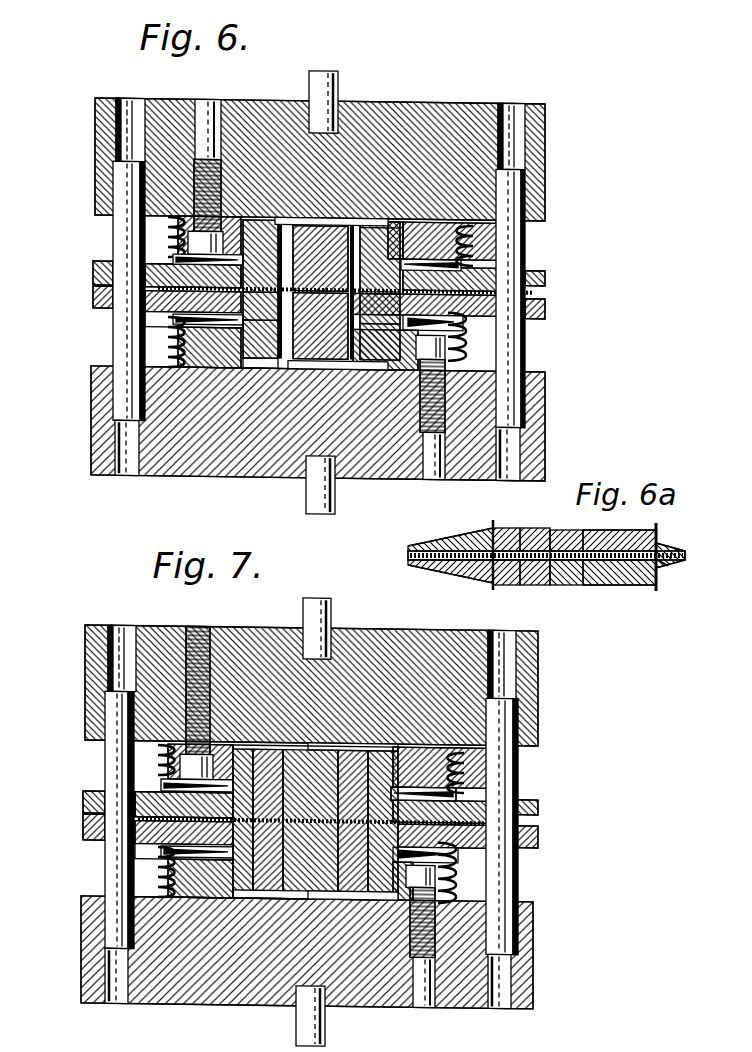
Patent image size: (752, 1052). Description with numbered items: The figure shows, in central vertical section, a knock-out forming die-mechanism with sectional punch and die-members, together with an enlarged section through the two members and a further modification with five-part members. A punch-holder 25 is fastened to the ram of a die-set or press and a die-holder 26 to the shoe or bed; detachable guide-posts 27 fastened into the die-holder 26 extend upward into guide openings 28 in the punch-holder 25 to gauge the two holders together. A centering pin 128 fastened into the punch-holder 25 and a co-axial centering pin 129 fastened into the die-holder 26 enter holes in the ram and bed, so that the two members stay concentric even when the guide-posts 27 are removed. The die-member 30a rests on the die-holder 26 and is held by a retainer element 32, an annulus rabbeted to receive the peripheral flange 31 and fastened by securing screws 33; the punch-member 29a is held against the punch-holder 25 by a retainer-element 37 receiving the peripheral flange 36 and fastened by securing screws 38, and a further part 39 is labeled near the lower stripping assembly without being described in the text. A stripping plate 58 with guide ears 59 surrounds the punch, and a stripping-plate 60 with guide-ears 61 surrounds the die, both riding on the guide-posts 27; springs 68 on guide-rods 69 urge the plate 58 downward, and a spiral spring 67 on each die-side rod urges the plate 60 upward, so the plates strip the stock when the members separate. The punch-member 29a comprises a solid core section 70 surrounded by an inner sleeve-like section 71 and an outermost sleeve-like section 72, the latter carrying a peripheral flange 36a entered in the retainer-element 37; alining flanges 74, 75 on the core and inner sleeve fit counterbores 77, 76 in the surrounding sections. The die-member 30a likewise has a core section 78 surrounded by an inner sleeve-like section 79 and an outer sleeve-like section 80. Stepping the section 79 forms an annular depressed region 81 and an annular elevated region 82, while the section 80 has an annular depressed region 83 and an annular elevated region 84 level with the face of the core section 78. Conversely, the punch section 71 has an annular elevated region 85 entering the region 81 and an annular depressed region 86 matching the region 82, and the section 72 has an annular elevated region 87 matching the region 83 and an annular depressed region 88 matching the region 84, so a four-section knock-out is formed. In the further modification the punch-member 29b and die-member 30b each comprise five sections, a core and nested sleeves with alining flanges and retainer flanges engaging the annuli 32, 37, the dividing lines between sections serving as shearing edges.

In FIG. 6, the punch-holder 25 is at (100, 140).
In FIG. 7, the punch-holder 25 is at (367, 626).
In FIG. 6, the die-holder 26 is at (90, 417).
In FIG. 7, the die-holder 26 is at (170, 992).
In FIG. 6, the guide-posts 27 is at (118, 228).
In FIG. 7, the guide-posts 27 is at (105, 752).
In FIG. 6, the guide openings 28 is at (115, 106).
In FIG. 7, the guide openings 28 is at (110, 648).
In FIG. 6, the punch-member 29a is at (383, 205).
In FIG. 6A, the punch-member 29a is at (652, 528).
In FIG. 7, the punch-member 29b is at (292, 738).
In FIG. 6, the die-member 30a is at (300, 368).
In FIG. 6A, the die-member 30a is at (647, 580).
In FIG. 7, the die-member 30b is at (285, 896).
In FIG. 6, the peripheral flange 31 is at (232, 365).
In FIG. 7, the peripheral flange 31 is at (212, 891).
In FIG. 6, the retainer element 32 is at (168, 342).
In FIG. 7, the retainer element 32 is at (165, 870).
In FIG. 6, the securing screws 33 is at (448, 338).
In FIG. 7, the securing screws 33 is at (447, 866).
In FIG. 7, the peripheral flange 36 is at (385, 733).
In FIG. 6, the peripheral flange 36a is at (232, 207).
In FIG. 6, the retainer-element 37 is at (450, 248).
In FIG. 7, the retainer-element 37 is at (448, 781).
In FIG. 6, the securing screws 38 is at (170, 222).
In FIG. 7, the securing screws 38 is at (162, 748).
In FIG. 6, the washer 39 is at (168, 318).
In FIG. 6A, the washer 39 is at (655, 558).
In FIG. 7, the washer 39 is at (165, 845).
In FIG. 6, the stripping plate 58 is at (537, 264).
In FIG. 7, the stripping plate 58 is at (100, 790).
In FIG. 6, the guide ears 59 is at (88, 267).
In FIG. 7, the guide ears 59 is at (75, 800).
In FIG. 6, the stripping-plate 60 is at (500, 297).
In FIG. 7, the stripping-plate 60 is at (120, 832).
In FIG. 6, the guide-ears 61 is at (88, 291).
In FIG. 7, the guide-ears 61 is at (75, 825).
In FIG. 6, the spiral spring 67 is at (168, 354).
In FIG. 7, the spiral spring 67 is at (125, 858).
In FIG. 6, the springs 68 is at (175, 250).
In FIG. 7, the springs 68 is at (165, 780).
In FIG. 6, the guide-rods 69 is at (297, 276).
In FIG. 7, the guide-rods 69 is at (292, 806).
In FIG. 6, the core section 70 is at (320, 259).
In FIG. 6A, the core section 70 is at (460, 522).
In FIG. 6, the inner sleeve-like section 71 is at (340, 200).
In FIG. 6A, the inner sleeve-like section 71 is at (512, 533).
In FIG. 6, the outermost sleeve-like section 72 is at (258, 215).
In FIG. 6A, the outermost sleeve-like section 72 is at (653, 518).
In FIG. 6, the alining flange 74 is at (287, 220).
In FIG. 6, the alining flange 75 is at (360, 214).
In FIG. 6, the counterbore 76 is at (260, 289).
In FIG. 6, the counterbore 77 is at (380, 291).
In FIG. 6, the core section 78 is at (320, 326).
In FIG. 6A, the core section 78 is at (429, 554).
In FIG. 6, the inner sleeve-like section 79 is at (343, 338).
In FIG. 6A, the inner sleeve-like section 79 is at (487, 565).
In FIG. 6, the outer sleeve-like section 80 is at (258, 362).
In FIG. 6A, the outer sleeve-like section 80 is at (635, 570).
In FIG. 6, the annular depressed region 81 is at (260, 339).
In FIG. 6A, the annular depressed region 81 is at (505, 553).
In FIG. 6, the annular elevated region 82 is at (260, 306).
In FIG. 6A, the annular elevated region 82 is at (533, 555).
In FIG. 6, the annular depressed region 83 is at (380, 342).
In FIG. 6A, the annular depressed region 83 is at (555, 557).
In FIG. 6, the annular elevated region 84 is at (381, 309).
In FIG. 6A, the annular elevated region 84 is at (587, 557).
In FIG. 6A, the annular elevated region 85 is at (490, 540).
In FIG. 6A, the annular depressed region 86 is at (528, 537).
In FIG. 6A, the annular elevated region 87 is at (560, 542).
In FIG. 6A, the annular depressed region 88 is at (605, 542).
In FIG. 6, the centering pin 128 is at (328, 75).
In FIG. 7, the centering pin 128 is at (295, 605).
In FIG. 6, the centering pin 129 is at (300, 492).
In FIG. 7, the centering pin 129 is at (288, 1018).